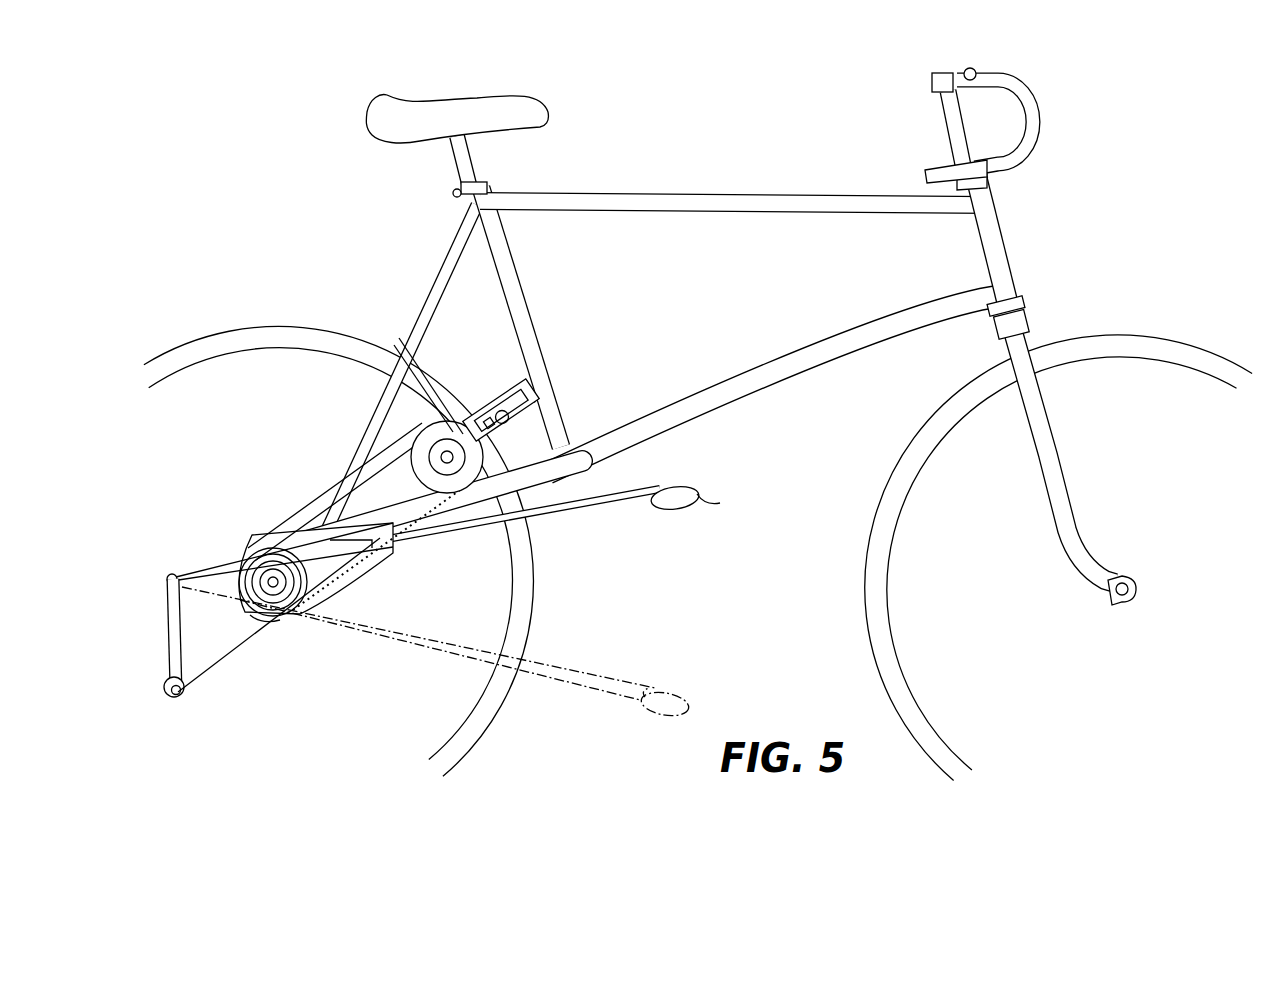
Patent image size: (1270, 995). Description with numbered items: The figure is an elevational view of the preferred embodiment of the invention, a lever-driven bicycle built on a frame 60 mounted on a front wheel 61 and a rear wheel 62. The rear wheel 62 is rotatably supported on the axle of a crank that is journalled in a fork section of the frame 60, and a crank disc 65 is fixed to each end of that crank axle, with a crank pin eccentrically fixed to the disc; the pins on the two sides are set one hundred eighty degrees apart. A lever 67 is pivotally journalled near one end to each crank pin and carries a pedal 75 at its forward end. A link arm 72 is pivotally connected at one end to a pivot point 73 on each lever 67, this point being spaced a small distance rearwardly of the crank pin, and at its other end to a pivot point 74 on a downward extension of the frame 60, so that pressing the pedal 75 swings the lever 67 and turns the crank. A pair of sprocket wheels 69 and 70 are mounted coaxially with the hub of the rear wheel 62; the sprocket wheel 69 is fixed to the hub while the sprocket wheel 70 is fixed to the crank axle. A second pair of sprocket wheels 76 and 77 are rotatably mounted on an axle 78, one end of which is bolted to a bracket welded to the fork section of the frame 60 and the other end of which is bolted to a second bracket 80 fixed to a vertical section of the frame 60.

The frame 60 is at (775, 196).
The front wheel 61 is at (1133, 347).
The rear wheel 62 is at (280, 337).
The crank disc 65 is at (296, 618).
The lever 67 is at (568, 512).
The sprocket wheel 69 is at (328, 592).
The sprocket wheel 70 is at (265, 613).
The link arm 72 is at (165, 665).
The pivot point 73 is at (169, 576).
The pivot point 74 is at (183, 697).
The pedal 75 is at (705, 505).
The sprocket wheel 76 is at (440, 440).
The sprocket wheel 77 is at (500, 443).
The axle 78 is at (447, 440).
The second bracket 80 is at (490, 412).